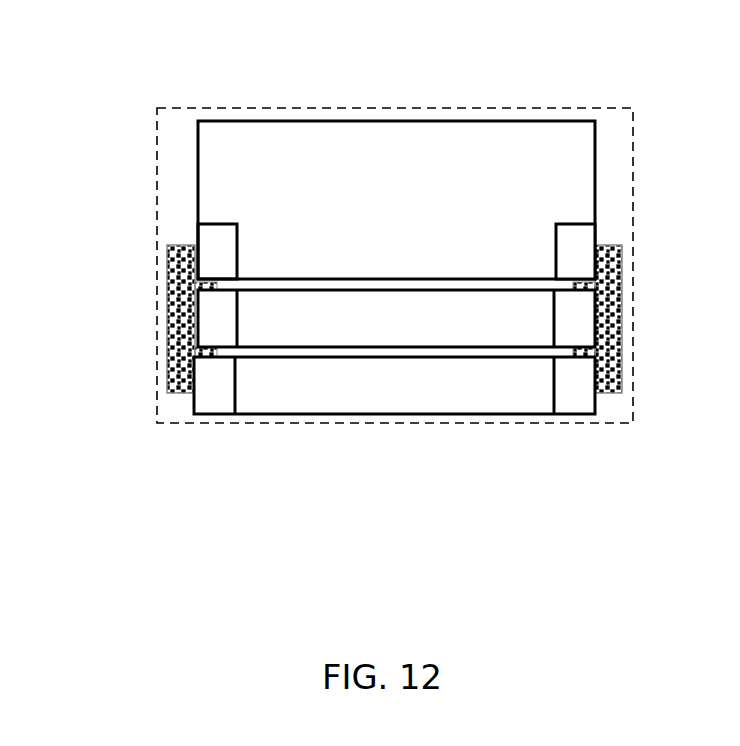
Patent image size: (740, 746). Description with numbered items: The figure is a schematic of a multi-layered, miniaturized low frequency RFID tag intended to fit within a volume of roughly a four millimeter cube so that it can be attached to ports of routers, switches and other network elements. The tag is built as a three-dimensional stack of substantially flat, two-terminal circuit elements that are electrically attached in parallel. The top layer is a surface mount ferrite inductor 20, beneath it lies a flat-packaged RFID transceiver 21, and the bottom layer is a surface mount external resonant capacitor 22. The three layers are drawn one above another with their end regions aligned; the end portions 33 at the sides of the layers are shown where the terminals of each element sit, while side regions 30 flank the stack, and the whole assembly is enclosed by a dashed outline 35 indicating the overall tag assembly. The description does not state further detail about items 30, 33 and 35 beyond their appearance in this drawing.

The battery pack enclosure 35 is at (237, 107).
The insulating spacer / sealing material 30 is at (168, 388).
The surface mount ferrite inductor 20 is at (396, 200).
The flat-packaged RFID transceiver 21 is at (396, 318).
The surface mount external resonant capacitor 22 is at (394, 385).
The terminal end portions 33 is at (573, 248).